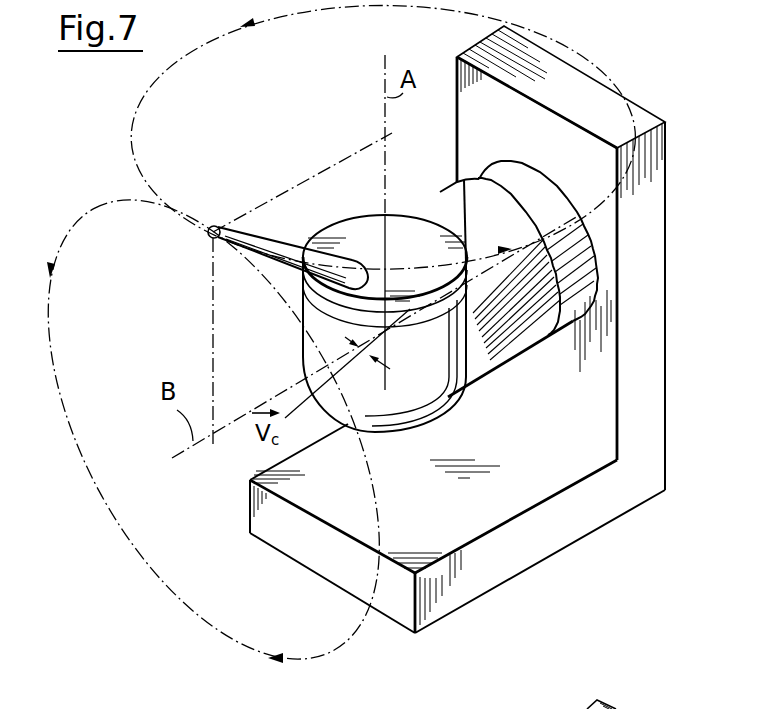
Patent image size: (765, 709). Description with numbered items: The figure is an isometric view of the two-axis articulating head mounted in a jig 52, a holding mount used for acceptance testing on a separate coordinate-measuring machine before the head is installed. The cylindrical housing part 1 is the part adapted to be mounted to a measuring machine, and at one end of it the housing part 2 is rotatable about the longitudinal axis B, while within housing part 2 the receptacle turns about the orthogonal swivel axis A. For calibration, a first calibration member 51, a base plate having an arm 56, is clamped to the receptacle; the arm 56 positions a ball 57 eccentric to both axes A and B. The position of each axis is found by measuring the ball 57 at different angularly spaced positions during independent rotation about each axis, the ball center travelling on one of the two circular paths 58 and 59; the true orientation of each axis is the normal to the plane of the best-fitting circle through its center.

The cylindrical housing part 1 is at (524, 352).
The housing part 2 is at (395, 416).
The first calibration member 51 is at (352, 228).
The jig 52 is at (602, 512).
The arm 56 is at (284, 242).
The ball 57 is at (207, 236).
The circular path 58 is at (210, 624).
The circular path 59 is at (266, 22).